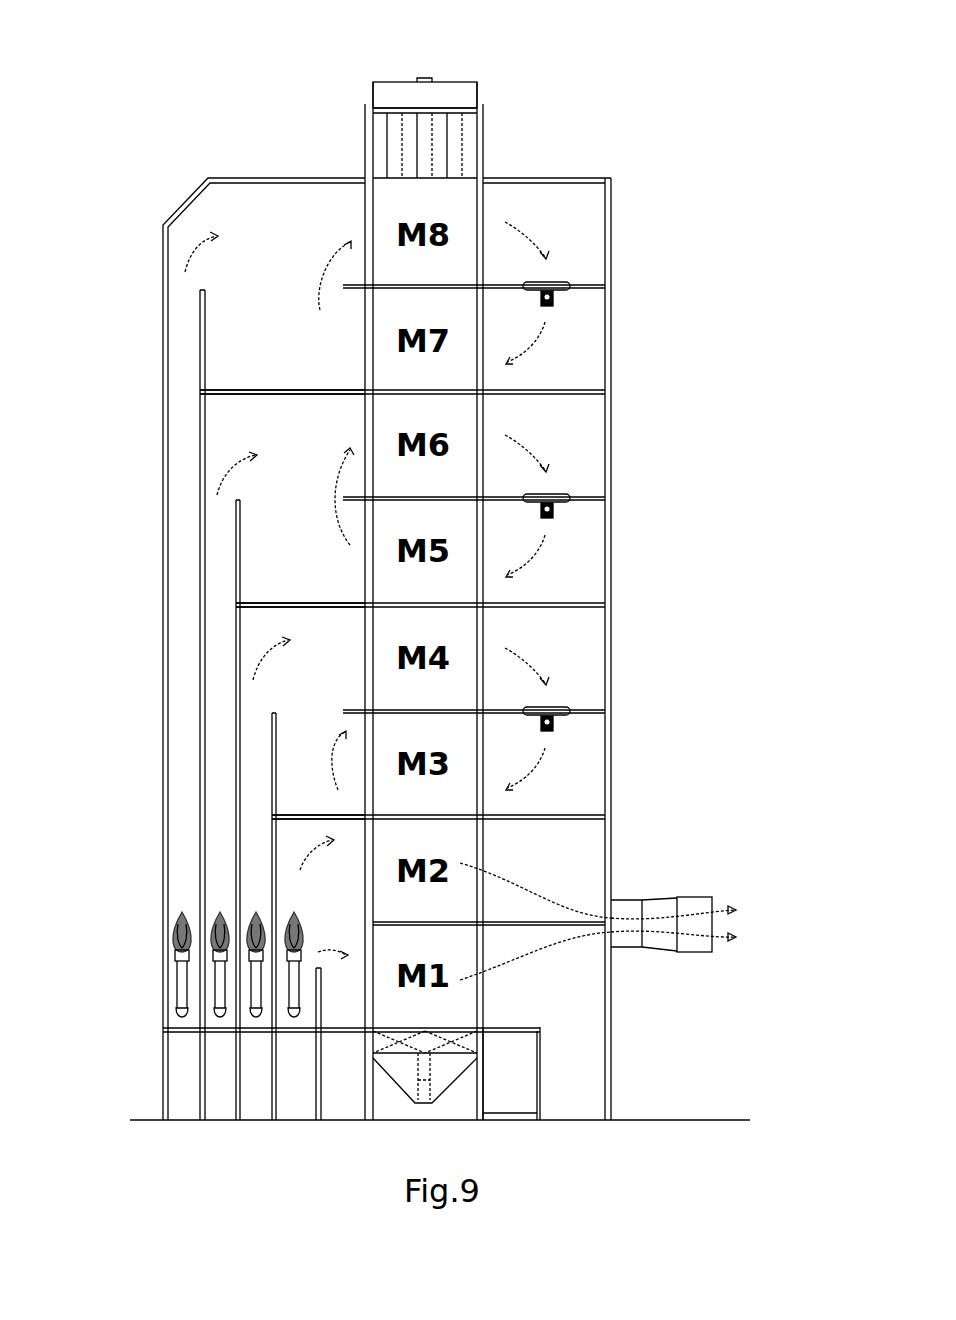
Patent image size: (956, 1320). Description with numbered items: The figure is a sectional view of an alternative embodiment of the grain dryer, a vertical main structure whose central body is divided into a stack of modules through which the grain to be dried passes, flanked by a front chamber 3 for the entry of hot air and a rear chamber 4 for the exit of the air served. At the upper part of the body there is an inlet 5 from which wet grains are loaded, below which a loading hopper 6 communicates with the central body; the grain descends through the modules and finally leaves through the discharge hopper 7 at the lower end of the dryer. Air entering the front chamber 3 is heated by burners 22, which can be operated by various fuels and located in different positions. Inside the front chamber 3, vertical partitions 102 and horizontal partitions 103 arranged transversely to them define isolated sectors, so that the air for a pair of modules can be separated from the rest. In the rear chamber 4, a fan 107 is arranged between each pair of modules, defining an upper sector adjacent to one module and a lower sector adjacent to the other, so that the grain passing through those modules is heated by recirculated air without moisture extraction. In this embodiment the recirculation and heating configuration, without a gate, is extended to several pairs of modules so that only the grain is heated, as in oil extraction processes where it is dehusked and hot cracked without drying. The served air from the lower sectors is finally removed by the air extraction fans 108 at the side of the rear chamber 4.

The front chamber 3 is at (246, 198).
The rear chamber 4 is at (672, 436).
The inlet 5 is at (453, 76).
The loading hopper 6 is at (425, 146).
The discharge hopper 7 is at (442, 1075).
The burners 22 is at (178, 977).
The second vertical partition 102 is at (200, 623).
The horizontal partition 103 is at (278, 394).
The fan 107 is at (558, 293).
The air extraction fans 108 is at (660, 900).